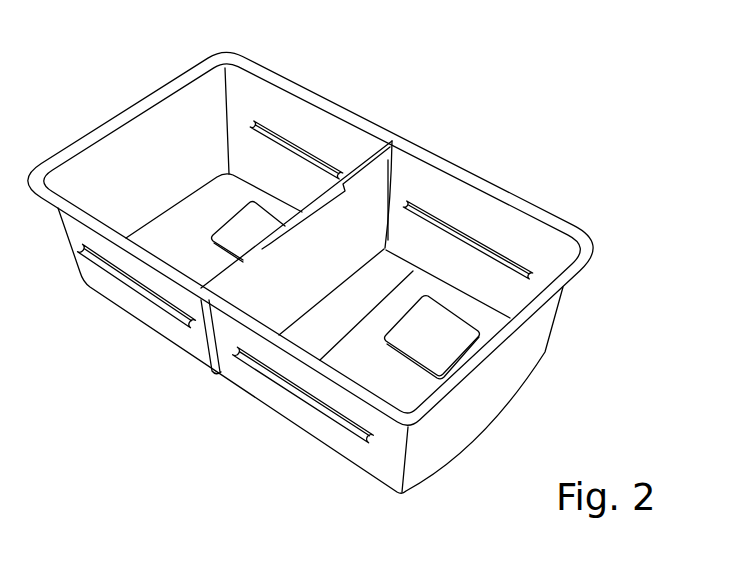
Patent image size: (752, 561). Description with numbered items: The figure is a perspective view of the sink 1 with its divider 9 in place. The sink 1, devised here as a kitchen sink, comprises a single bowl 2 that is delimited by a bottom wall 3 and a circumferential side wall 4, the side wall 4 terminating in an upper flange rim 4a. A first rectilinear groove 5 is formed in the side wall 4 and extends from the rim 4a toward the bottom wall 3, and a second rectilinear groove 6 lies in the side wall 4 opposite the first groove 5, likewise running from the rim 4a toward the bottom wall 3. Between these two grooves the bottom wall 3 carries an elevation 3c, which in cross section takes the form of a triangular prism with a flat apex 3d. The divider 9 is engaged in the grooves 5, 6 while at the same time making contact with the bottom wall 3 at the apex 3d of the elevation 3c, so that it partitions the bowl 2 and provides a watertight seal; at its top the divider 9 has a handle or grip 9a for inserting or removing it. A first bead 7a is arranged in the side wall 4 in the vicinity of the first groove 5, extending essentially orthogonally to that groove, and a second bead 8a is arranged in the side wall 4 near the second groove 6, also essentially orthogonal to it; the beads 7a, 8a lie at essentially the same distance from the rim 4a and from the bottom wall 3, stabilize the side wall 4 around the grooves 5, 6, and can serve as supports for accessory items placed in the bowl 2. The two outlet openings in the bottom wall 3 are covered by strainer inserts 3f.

The sink 1 is at (320, 265).
The bowl 2 is at (244, 98).
The bottom wall 3 is at (402, 380).
The elevation 3c is at (380, 282).
The flat apex 3d is at (328, 300).
The strainer inserts 3f is at (247, 235).
The circumferential side wall 4 is at (124, 157).
The upper flange rim 4a is at (467, 380).
The first rectilinear groove 5 is at (309, 168).
The second rectilinear groove 6 is at (203, 302).
The first bead 7a is at (270, 133).
The second bead 8a is at (118, 277).
The divider 9 is at (382, 196).
The handle or grip 9a is at (311, 190).